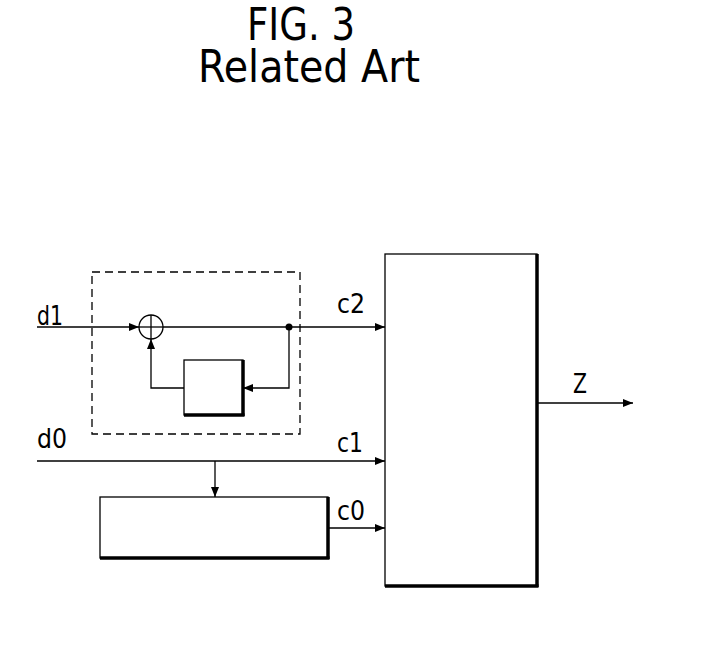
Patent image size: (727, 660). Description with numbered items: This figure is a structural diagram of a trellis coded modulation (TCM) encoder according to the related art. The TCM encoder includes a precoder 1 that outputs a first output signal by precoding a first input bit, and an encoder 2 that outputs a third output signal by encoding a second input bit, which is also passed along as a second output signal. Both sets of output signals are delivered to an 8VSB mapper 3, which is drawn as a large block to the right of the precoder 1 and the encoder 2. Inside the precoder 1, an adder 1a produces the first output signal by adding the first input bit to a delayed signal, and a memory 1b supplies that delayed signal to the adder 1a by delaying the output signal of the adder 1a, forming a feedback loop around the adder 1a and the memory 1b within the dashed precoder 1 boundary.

The precoder 1 is at (167, 337).
The adder 1a is at (160, 320).
The memory 1b is at (184, 397).
The encoder 2 is at (223, 547).
The 8VSB mapper 3 is at (460, 273).